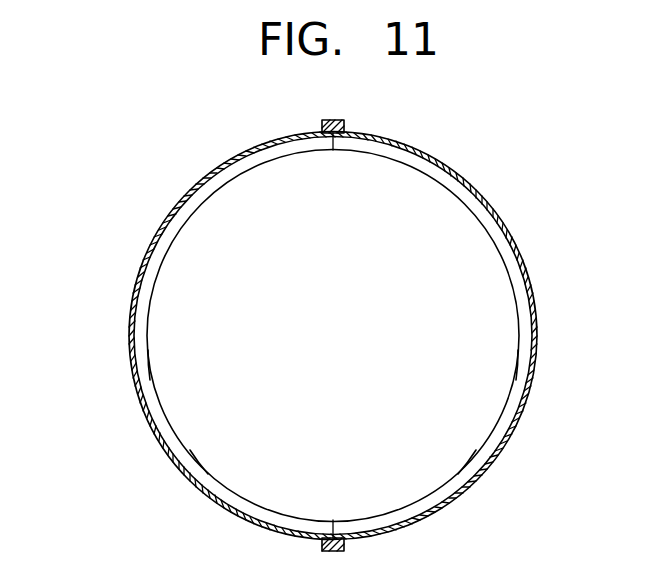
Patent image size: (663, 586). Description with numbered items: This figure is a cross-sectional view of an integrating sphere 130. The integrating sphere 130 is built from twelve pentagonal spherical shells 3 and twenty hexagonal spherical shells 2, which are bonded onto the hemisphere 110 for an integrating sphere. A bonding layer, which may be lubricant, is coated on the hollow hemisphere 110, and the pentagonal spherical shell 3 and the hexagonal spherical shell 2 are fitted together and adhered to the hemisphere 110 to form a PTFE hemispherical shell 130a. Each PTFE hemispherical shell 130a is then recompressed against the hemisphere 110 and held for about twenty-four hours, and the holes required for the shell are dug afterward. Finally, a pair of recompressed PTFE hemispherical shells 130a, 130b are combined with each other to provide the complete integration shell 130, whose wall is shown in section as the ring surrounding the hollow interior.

The hemisphere for an integrating sphere 110 is at (153, 433).
The integrating sphere 130 is at (333, 336).
The PTFE hemispherical shell 130a is at (152, 314).
The PTFE hemispherical shell 130b is at (514, 314).
The pentagonal spherical shell 3 is at (150, 366).
The hexagonal spherical shell 2 is at (197, 462).